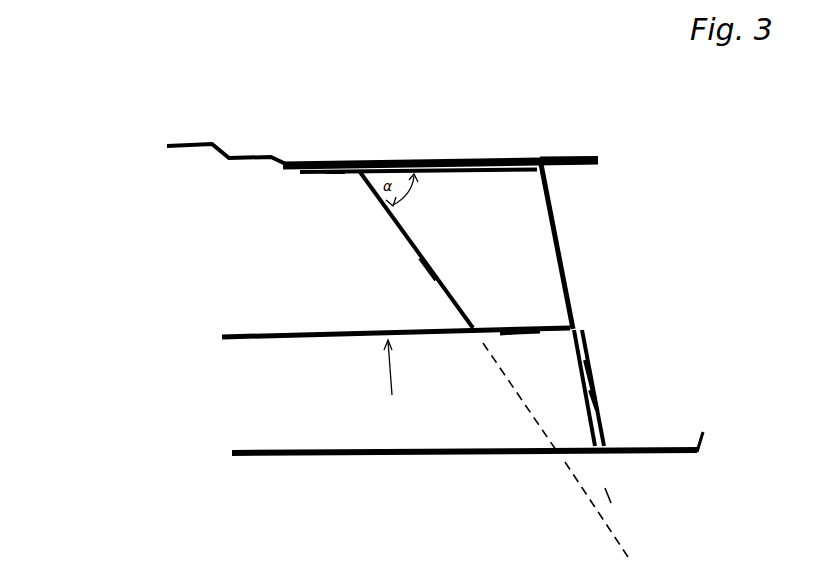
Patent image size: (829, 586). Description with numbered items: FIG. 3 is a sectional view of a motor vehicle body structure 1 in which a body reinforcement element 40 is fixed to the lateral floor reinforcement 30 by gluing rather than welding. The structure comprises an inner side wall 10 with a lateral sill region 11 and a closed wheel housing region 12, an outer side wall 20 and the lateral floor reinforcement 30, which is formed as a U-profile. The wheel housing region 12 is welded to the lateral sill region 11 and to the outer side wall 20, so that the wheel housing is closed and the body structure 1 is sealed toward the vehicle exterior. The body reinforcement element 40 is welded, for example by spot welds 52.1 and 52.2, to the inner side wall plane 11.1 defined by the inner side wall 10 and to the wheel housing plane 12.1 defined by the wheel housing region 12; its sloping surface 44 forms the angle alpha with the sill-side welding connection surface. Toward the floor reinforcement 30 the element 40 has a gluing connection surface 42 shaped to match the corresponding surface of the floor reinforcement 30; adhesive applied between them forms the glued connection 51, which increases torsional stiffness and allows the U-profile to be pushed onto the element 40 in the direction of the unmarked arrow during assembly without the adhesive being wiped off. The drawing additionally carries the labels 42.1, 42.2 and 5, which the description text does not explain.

The motor vehicle body structure 1 is at (75, 125).
The inner side wall 10 is at (400, 120).
The lateral sill region 11 is at (481, 160).
The inner side wall plane 11.1 is at (560, 157).
The wheel housing region 12 is at (566, 250).
The wheel housing plane 12.1 is at (576, 302).
The outer side wall 20 is at (340, 458).
The lateral floor reinforcement 30 is at (298, 341).
The body reinforcement element 40 is at (398, 234).
The gluing connection surface 42 is at (513, 325).
The first contact region 42.1 is at (328, 178).
The second contact region 42.2 is at (576, 398).
The sloping surface 44 is at (428, 270).
The axis 5 is at (600, 462).
The glued connection 51 is at (528, 325).
The spot weld 52.1 is at (336, 170).
The spot weld 52.2 is at (590, 378).